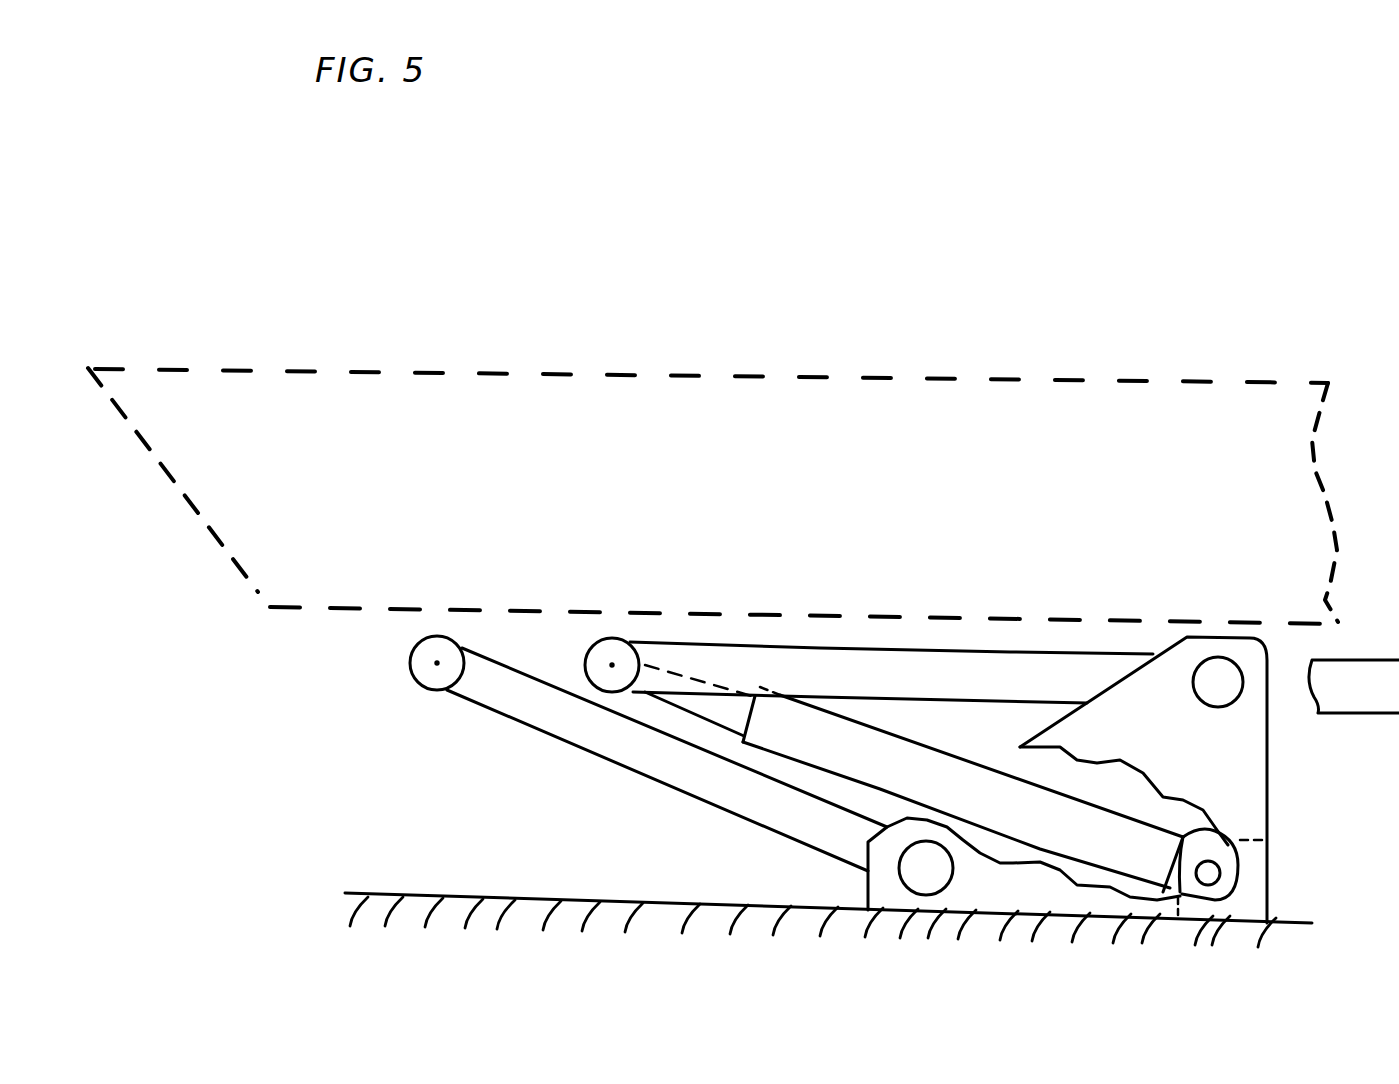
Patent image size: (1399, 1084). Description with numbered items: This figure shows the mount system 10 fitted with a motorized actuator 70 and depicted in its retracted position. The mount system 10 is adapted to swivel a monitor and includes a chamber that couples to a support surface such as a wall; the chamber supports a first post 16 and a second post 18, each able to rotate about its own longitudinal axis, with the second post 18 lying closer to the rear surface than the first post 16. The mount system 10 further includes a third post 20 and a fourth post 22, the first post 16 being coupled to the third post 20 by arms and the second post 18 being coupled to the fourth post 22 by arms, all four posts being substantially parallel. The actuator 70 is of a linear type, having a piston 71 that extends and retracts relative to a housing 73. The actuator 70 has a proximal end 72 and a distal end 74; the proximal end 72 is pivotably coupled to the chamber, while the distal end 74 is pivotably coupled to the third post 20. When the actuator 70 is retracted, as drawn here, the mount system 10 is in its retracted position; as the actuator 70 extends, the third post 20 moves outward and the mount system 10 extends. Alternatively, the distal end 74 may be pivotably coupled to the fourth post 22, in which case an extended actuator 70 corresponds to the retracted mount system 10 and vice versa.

The mount system 10 is at (478, 763).
The first post 16 is at (1222, 700).
The second post 18 is at (925, 873).
The third post 20 is at (606, 640).
The fourth post 22 is at (428, 637).
The actuator 70 is at (905, 776).
The piston 71 is at (748, 643).
The proximal end 72 is at (1187, 840).
The housing 73 is at (938, 777).
The distal end 74 is at (650, 672).